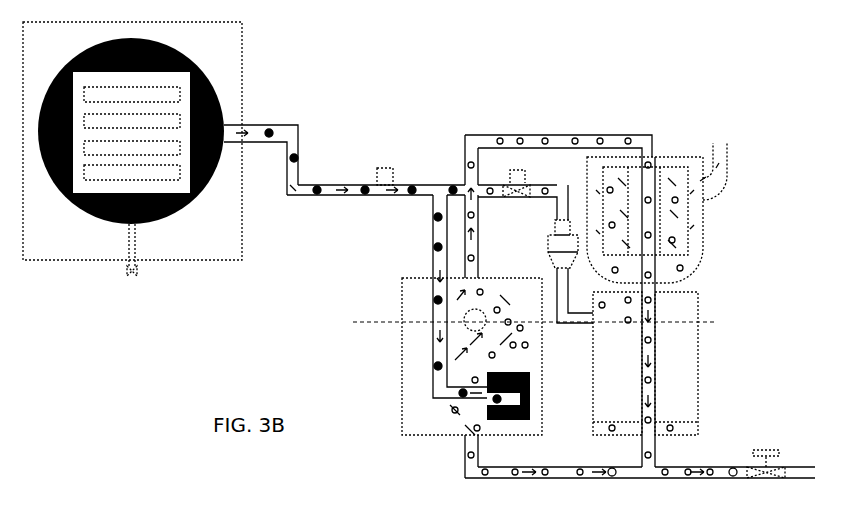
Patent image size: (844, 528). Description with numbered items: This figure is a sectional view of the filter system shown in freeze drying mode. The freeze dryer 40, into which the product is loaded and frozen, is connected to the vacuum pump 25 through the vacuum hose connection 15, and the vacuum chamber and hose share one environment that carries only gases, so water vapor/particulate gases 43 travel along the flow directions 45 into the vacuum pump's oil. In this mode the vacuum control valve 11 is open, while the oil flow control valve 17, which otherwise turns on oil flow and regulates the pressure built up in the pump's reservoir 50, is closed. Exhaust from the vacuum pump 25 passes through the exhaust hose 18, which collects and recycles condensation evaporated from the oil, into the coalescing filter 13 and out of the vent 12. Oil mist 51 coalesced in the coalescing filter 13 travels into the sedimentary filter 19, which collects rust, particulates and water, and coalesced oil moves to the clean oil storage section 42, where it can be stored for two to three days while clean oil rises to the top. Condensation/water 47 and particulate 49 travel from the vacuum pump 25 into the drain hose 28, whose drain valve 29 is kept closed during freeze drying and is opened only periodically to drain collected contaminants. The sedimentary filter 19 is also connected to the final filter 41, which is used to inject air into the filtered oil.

The freeze dryer 40 is at (242, 102).
The flow directions 45 is at (296, 139).
The water vapor/particulate gases 43 is at (318, 197).
The vacuum control valve 11 is at (378, 186).
The vacuum hose connection 15 is at (436, 256).
The exhaust hose 18 is at (467, 142).
The oil flow control valve 17 is at (531, 191).
The final filter 41 is at (548, 249).
The coalescing filter 13 is at (704, 258).
The vent 12 is at (720, 157).
The clean oil storage section 42 is at (668, 313).
The oil mist 51 is at (605, 317).
The sedimentary filter 19 is at (698, 405).
The pump's reservoir 50 is at (421, 342).
The vacuum pump 25 is at (402, 417).
The drain hose 28 is at (568, 468).
The particulate 49 is at (612, 479).
The condensation/water 47 is at (733, 479).
The drain valve 29 is at (776, 466).